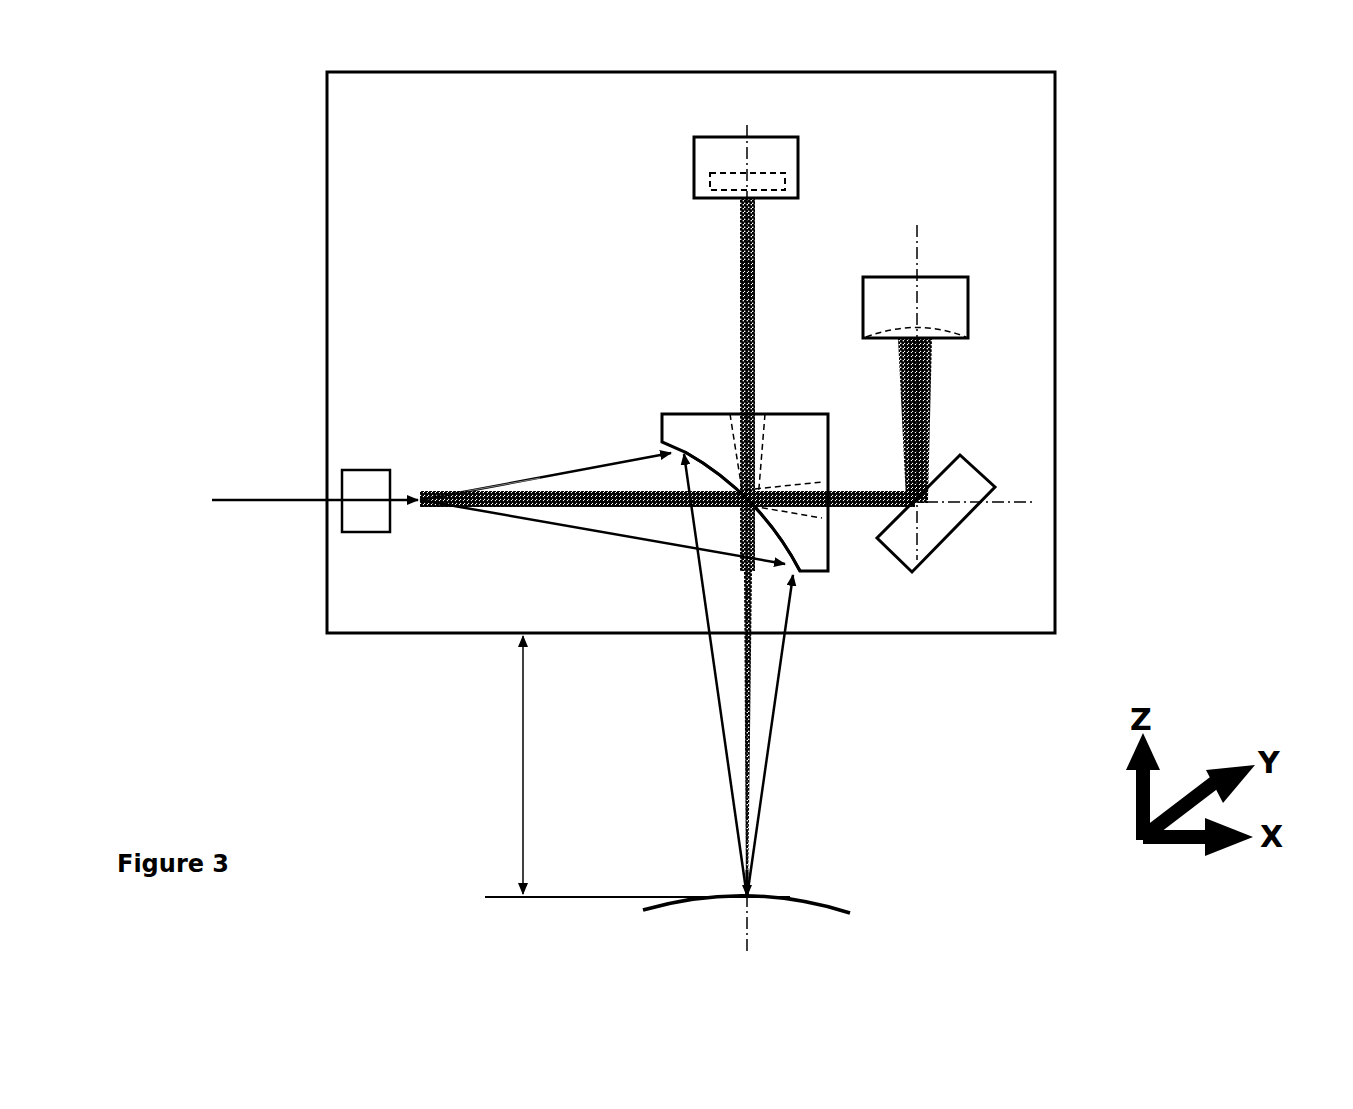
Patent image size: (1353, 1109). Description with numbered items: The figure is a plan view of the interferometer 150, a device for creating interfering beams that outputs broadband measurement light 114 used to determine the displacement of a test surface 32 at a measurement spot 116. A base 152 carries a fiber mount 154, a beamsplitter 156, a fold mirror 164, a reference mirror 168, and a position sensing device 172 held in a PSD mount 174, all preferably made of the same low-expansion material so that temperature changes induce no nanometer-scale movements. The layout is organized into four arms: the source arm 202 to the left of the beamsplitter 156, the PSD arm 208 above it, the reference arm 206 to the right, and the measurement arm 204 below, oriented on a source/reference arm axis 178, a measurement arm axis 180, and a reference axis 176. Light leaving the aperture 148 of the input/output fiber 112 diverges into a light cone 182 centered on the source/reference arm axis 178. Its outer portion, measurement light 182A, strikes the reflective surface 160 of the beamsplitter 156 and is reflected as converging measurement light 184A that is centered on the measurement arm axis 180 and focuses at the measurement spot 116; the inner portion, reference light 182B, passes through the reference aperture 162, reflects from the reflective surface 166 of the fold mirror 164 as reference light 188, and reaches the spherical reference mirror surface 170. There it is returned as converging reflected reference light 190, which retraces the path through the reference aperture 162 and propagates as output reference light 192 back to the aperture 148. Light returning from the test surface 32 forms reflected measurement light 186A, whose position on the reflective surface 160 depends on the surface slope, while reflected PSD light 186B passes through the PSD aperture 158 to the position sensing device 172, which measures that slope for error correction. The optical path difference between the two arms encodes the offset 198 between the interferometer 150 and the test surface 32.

The test surface 32 is at (830, 905).
The input/output fiber 112 is at (254, 506).
The broadband measurement light 114 is at (752, 675).
The measurement spot 116 is at (757, 905).
The aperture of input/output fiber 148 is at (418, 491).
The interferometer 150 is at (636, 352).
The base 152 is at (325, 128).
The fiber mount 154 is at (373, 468).
The beamsplitter 156 is at (701, 454).
The PSD aperture 158 is at (732, 410).
The reflective surface of beamsplitter 160 is at (712, 474).
The reference aperture 162 is at (814, 480).
The fold mirror 164 is at (978, 490).
The reflective surface of fold mirror 166 is at (915, 483).
The reference mirror 168 is at (920, 268).
The reference mirror surface 170 is at (940, 326).
The position sensing device 172 is at (712, 182).
The PSD mount 174 is at (744, 148).
The reference axis 176 is at (921, 226).
The source/reference arm axis 178 is at (996, 506).
The measurement arm axis 180 is at (745, 128).
The light cone 182 is at (667, 447).
The measurement light 182A is at (560, 487).
The reference light 182B is at (605, 488).
The converging measurement light 184A is at (712, 663).
The reflected measurement light 186A is at (764, 735).
The reflected PSD light 186B is at (741, 203).
The reference light 188 is at (963, 410).
The reflected reference light 190 is at (927, 390).
The output reference light 192 is at (563, 511).
The offset 198 is at (520, 746).
The source arm 202 is at (515, 424).
The measurement arm 204 is at (696, 778).
The reference arm 206 is at (1020, 392).
The PSD arm 208 is at (686, 278).